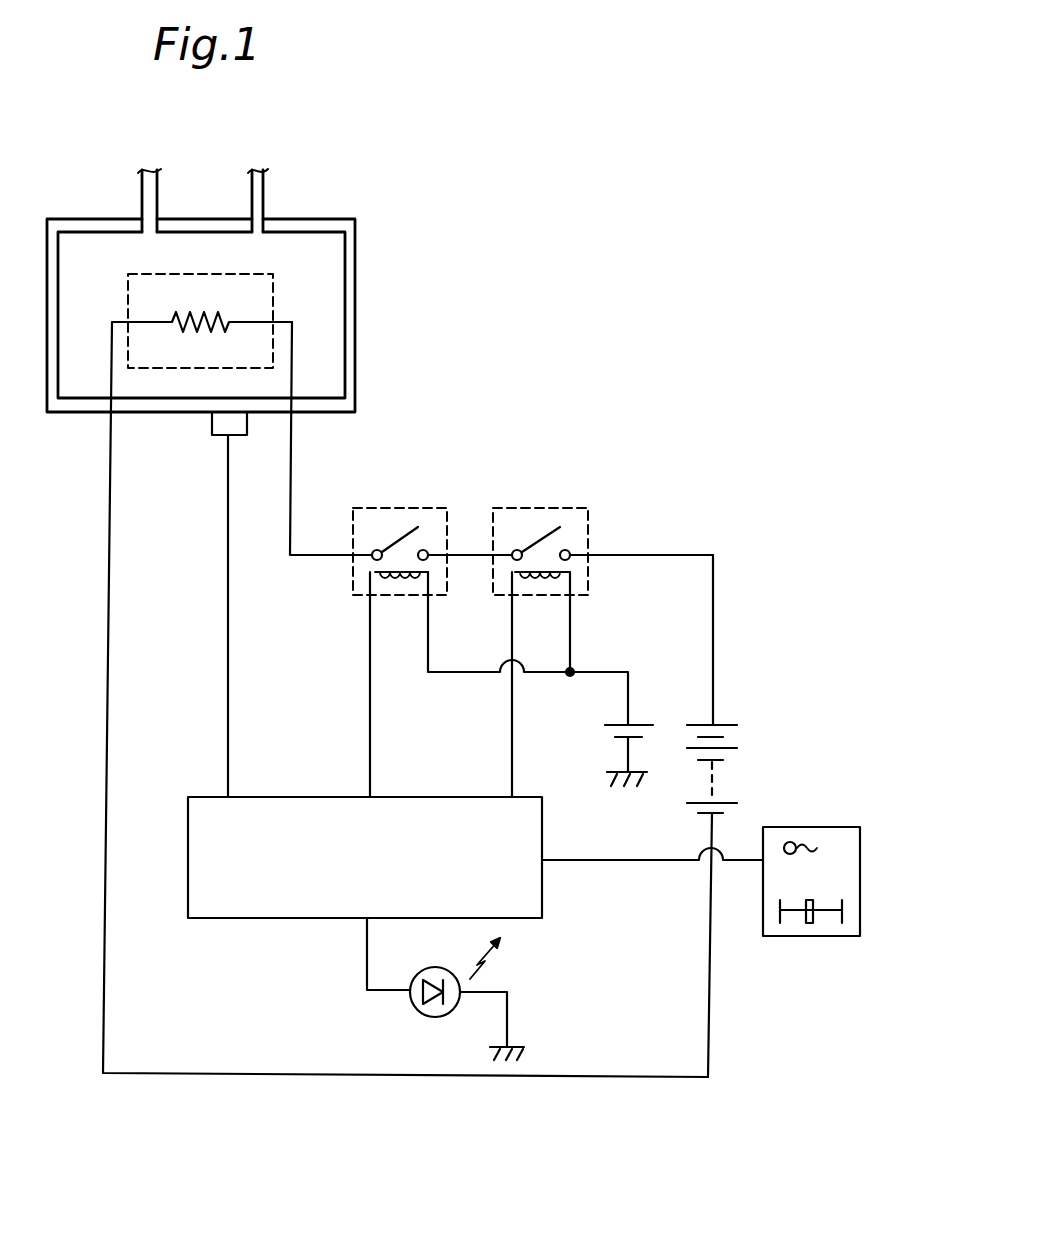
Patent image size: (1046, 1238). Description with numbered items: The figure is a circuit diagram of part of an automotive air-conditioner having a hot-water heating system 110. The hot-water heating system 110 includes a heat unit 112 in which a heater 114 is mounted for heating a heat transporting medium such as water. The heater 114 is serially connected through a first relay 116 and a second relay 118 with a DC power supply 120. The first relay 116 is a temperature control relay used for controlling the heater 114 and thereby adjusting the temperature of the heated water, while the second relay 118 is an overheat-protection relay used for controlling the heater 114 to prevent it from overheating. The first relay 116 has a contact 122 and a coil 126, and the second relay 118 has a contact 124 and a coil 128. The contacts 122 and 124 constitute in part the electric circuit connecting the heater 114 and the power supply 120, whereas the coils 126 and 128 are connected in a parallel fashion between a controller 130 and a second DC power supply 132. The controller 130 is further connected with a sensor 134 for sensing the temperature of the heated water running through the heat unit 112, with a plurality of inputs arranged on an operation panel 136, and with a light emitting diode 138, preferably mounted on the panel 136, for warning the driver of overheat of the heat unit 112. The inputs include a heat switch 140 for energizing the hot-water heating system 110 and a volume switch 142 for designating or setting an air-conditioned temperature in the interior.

The hot-water heating system 110 is at (382, 231).
The heat unit 112 is at (360, 275).
The heater 114 is at (242, 274).
The first relay 116 is at (490, 615).
The second relay 118 is at (558, 615).
The DC power supply 120 is at (728, 767).
The contact 122 is at (418, 538).
The contact 124 is at (560, 538).
The coil 126 is at (398, 593).
The coil 128 is at (540, 593).
The controller 130 is at (277, 918).
The DC power supply 132 is at (643, 715).
The sensor 134 is at (218, 436).
The operation panel 136 is at (846, 883).
The light emitting diode 138 is at (415, 1013).
The heat switch 140 is at (792, 840).
The volume switch 142 is at (842, 910).